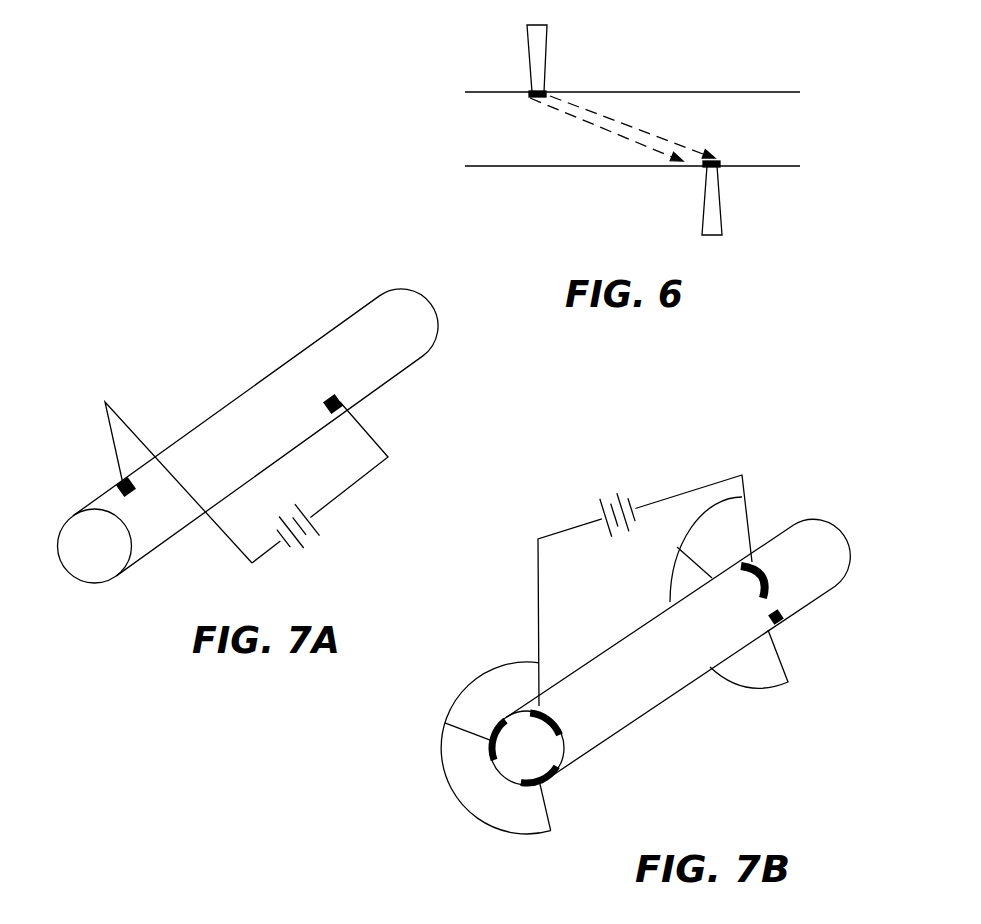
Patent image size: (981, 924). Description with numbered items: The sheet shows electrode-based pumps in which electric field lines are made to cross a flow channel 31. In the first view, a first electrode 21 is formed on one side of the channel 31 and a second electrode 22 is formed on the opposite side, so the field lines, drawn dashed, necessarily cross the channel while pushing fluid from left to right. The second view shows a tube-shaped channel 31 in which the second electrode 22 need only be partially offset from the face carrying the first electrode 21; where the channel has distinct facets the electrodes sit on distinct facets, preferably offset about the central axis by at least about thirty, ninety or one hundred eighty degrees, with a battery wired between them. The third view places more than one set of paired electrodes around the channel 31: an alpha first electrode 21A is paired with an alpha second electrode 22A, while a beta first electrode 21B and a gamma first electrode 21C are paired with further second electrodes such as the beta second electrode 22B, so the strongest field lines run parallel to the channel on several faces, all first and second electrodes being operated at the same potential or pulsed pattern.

In FIG. 6, the first electrode 21 is at (547, 38).
In FIG. 7A, the first electrode 21 is at (119, 480).
In FIG. 6, the second electrode 22 is at (720, 218).
In FIG. 7A, the second electrode 22 is at (342, 398).
In FIG. 6, the channel 31 is at (719, 114).
In FIG. 7A, the channel 31 is at (96, 552).
In FIG. 7B, the channel 31 is at (517, 766).
In FIG. 7B, the alpha first electrode 21A is at (563, 718).
In FIG. 7B, the beta first electrode 21B is at (553, 782).
In FIG. 7B, the gamma first electrode 21C is at (488, 750).
In FIG. 7B, the alpha second electrode 22A is at (772, 576).
In FIG. 7B, the beta second electrode 22B is at (784, 620).